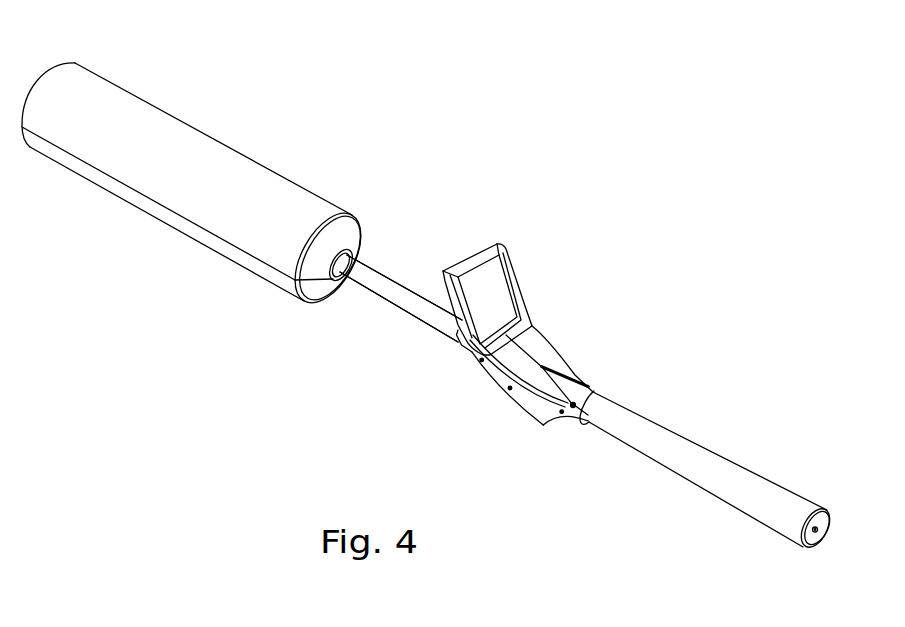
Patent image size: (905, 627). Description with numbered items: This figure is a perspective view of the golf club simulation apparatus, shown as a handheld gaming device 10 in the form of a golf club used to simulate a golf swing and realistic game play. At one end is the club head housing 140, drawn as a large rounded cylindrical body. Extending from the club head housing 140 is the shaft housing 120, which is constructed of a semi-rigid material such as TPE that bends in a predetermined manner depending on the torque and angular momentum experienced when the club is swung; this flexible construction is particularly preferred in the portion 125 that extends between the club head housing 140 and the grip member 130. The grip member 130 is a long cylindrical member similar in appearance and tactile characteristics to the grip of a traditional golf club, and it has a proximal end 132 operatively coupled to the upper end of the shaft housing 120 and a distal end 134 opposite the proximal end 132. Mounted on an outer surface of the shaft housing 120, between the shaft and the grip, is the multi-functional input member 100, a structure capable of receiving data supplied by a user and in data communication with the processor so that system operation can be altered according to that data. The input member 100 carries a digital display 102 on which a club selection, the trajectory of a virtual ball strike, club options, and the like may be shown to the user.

The handheld gaming device 10 is at (448, 73).
The multi-functional input member 100 is at (562, 322).
The digital display 102 is at (493, 285).
The shaft housing 120 is at (390, 270).
The portion 125 is at (410, 307).
The grip member 130 is at (713, 450).
The proximal end 132 is at (612, 395).
The distal end 134 is at (815, 533).
The club head housing 140 is at (200, 118).